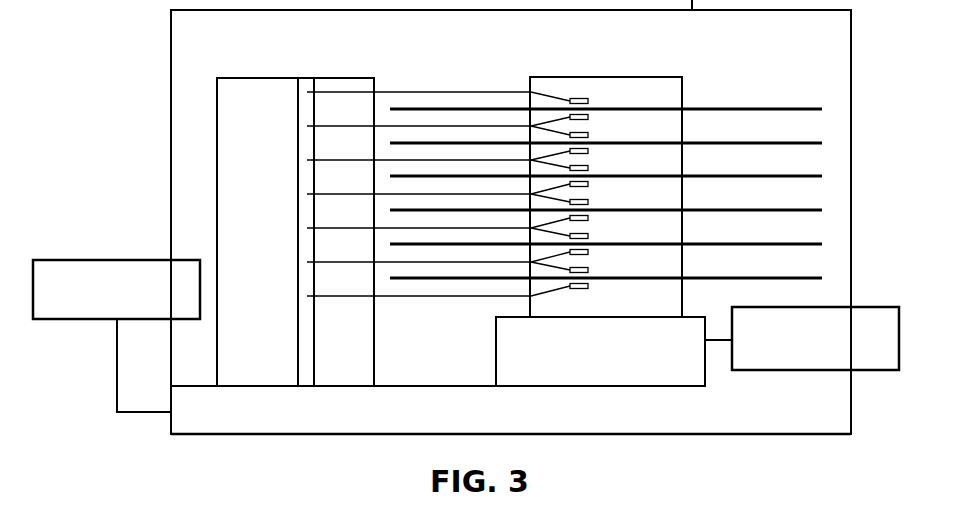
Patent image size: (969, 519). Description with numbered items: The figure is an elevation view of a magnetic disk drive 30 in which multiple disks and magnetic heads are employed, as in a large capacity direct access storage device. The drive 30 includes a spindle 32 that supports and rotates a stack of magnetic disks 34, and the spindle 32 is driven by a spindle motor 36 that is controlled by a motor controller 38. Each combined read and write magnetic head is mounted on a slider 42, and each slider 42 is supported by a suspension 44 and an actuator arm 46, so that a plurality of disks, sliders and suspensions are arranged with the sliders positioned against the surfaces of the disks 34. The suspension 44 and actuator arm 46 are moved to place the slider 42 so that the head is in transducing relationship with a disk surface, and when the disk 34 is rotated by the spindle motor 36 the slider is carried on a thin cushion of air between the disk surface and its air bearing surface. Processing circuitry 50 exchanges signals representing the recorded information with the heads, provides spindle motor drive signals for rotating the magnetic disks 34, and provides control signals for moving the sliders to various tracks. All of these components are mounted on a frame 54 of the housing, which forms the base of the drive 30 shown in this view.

The magnetic disk drive 30 is at (738, 72).
The spindle 32 is at (660, 77).
The magnetic disk 34 is at (798, 109).
The spindle motor 36 is at (593, 364).
The motor controller 38 is at (880, 370).
The slider 42 is at (578, 133).
The suspension 44 is at (572, 117).
The actuator arm 46 is at (482, 126).
The processing circuitry 50 is at (97, 259).
The frame 54 is at (293, 437).